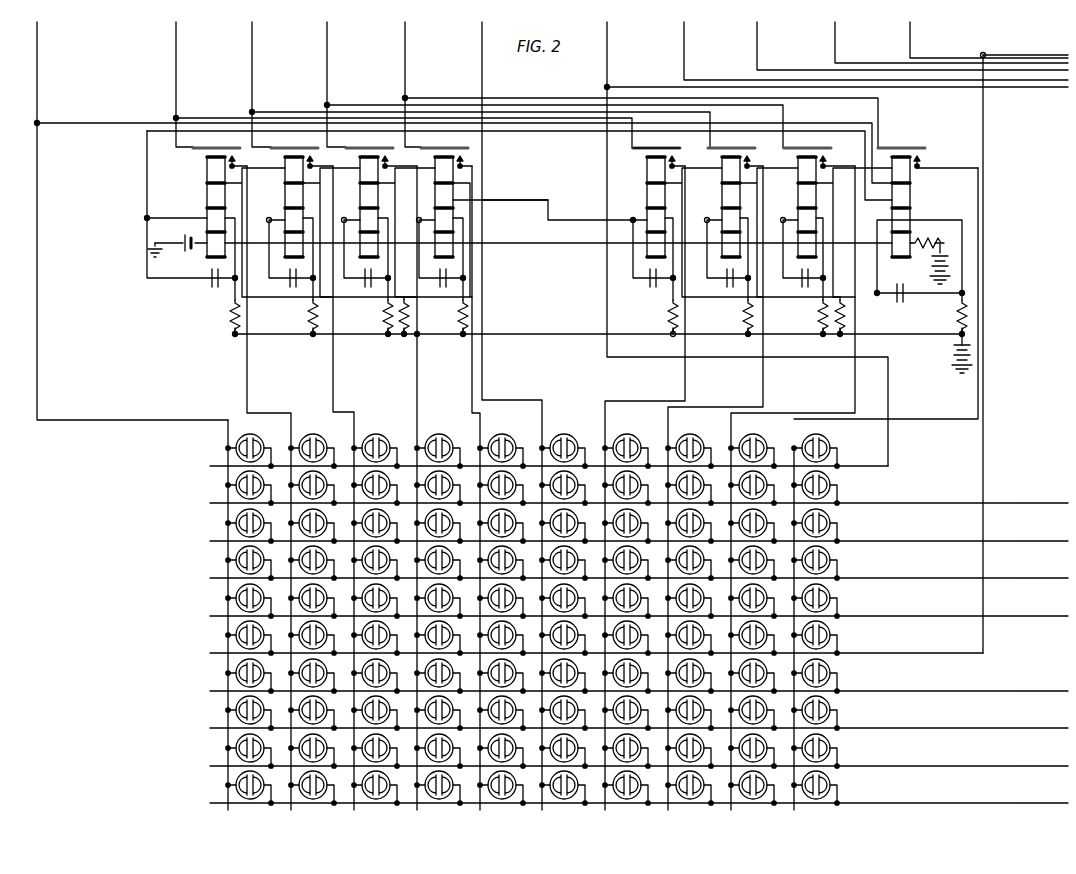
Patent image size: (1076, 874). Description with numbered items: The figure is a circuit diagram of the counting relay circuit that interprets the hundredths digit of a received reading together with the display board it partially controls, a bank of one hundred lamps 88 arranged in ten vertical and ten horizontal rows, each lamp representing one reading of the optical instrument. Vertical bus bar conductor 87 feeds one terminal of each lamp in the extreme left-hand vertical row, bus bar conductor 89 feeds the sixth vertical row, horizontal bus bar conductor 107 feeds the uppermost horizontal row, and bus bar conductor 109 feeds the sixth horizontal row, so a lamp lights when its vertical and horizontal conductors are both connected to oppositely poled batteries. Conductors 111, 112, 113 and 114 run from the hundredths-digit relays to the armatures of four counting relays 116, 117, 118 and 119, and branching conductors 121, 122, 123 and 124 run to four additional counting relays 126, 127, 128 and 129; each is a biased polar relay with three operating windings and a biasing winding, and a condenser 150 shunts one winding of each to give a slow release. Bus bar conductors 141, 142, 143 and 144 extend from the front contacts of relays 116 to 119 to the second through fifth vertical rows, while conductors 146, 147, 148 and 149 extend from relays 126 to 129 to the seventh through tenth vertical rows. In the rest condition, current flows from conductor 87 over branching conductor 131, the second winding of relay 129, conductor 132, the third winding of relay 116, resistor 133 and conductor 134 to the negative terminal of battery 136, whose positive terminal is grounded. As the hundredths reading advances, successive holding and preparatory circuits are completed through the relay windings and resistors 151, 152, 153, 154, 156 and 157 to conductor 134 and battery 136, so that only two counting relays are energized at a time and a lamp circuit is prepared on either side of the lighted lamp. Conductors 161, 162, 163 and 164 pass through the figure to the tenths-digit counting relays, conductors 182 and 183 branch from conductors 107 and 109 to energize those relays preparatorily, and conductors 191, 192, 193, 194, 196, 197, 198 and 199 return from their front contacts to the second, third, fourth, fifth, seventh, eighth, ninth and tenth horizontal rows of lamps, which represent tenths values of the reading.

The bus bar conductor 87 is at (37, 86).
The bank of one hundred lamps 88 is at (576, 615).
The bus bar conductor 89 is at (482, 296).
The horizontal bus bar conductor 107 is at (607, 168).
The bus bar conductor 109 is at (983, 464).
The conductor 111 is at (176, 64).
The conductor 112 is at (252, 56).
The conductor 113 is at (327, 56).
The conductor 114 is at (405, 58).
The counting relay 116 is at (207, 185).
The counting relay 117 is at (292, 202).
The counting relay 118 is at (367, 203).
The counting relay 119 is at (475, 212).
The branching conductor 121 is at (192, 118).
The branching conductor 122 is at (270, 111).
The branching conductor 123 is at (345, 105).
The branching conductor 124 is at (423, 98).
The counting relay 126 is at (657, 154).
The counting relay 127 is at (732, 154).
The counting relay 128 is at (806, 154).
The counting relay 129 is at (906, 154).
The branching conductor 131 is at (81, 123).
The conductor 132 is at (512, 126).
The resistor 133 is at (230, 314).
The conductor 134 is at (508, 336).
The battery 136 is at (962, 356).
The bus bar conductor 141 is at (249, 288).
The bus bar conductor 142 is at (333, 355).
The bus bar conductor 143 is at (416, 355).
The bus bar conductor 144 is at (476, 278).
The conductor 146 is at (685, 310).
The conductor 147 is at (767, 325).
The conductor 148 is at (847, 317).
The conductor 149 is at (985, 302).
The condenser 150 is at (213, 288).
The resistor 151 is at (310, 312).
The resistor 152 is at (380, 312).
The resistor 153 is at (470, 313).
The resistor 154 is at (410, 318).
The resistor 156 is at (668, 315).
The resistor 157 is at (745, 318).
The conductor 161 is at (684, 46).
The conductor 162 is at (757, 44).
The conductor 163 is at (835, 44).
The conductor 164 is at (910, 44).
The conductor 182 is at (628, 89).
The conductor 183 is at (1037, 55).
The conductor 191 is at (1034, 502).
The conductor 192 is at (1034, 539).
The conductor 193 is at (1034, 577).
The conductor 194 is at (1034, 614).
The conductor 196 is at (1031, 689).
The conductor 197 is at (1034, 726).
The conductor 198 is at (1034, 763).
The conductor 199 is at (639, 792).